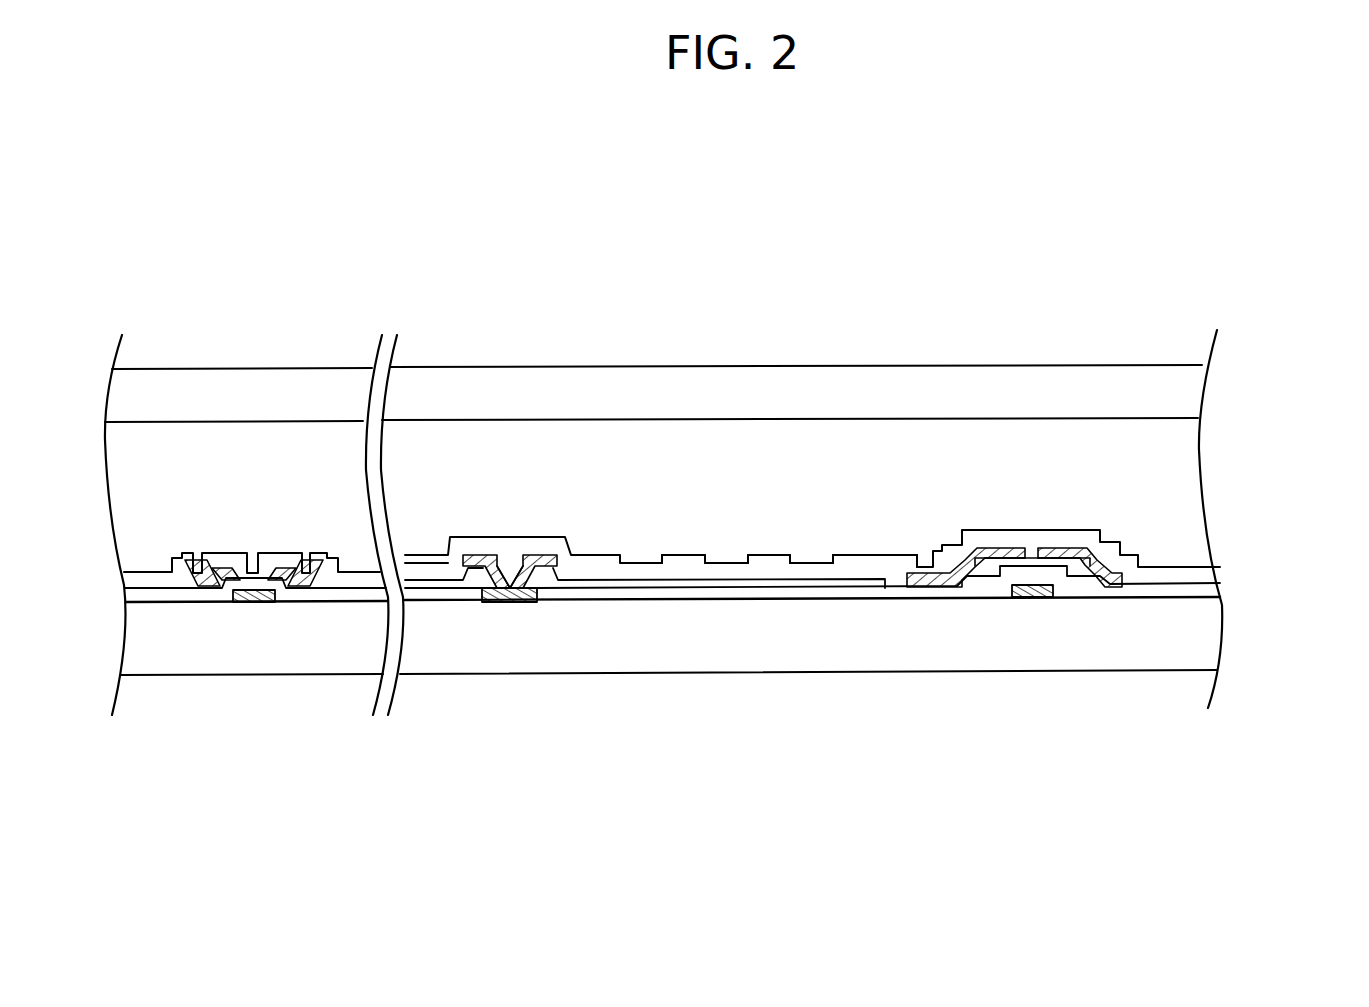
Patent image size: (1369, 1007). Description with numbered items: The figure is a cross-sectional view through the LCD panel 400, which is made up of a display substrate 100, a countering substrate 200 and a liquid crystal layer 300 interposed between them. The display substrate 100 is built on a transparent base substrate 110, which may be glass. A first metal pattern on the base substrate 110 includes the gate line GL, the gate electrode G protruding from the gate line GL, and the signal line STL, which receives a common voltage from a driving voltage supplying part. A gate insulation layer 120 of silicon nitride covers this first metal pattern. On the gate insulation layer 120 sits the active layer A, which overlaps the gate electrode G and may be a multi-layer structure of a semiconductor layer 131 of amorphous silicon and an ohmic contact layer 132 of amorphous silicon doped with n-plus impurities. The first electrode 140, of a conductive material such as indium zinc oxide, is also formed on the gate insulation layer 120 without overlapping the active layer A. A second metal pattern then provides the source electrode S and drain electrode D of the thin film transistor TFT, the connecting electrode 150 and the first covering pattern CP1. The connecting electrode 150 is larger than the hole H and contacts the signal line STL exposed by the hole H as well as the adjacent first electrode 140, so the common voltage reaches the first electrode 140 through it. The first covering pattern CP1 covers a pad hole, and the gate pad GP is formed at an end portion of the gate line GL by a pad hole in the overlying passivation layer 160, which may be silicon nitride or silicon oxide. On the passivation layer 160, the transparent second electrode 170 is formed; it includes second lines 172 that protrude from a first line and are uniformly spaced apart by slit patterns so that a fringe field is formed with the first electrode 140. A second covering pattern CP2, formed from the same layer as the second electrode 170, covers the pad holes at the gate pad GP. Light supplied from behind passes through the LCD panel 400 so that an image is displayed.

The LCD panel 400 is at (716, 274).
The countering substrate 200 is at (1183, 395).
The liquid crystal layer 300 is at (1197, 479).
The display substrate 100 is at (1302, 567).
The base substrate 110 is at (1215, 646).
The gate insulation layer 120 is at (1222, 590).
The first electrode 140 is at (658, 586).
The connecting electrode 150 is at (540, 585).
The passivation layer 160 is at (163, 582).
The second electrode 170 is at (868, 553).
The second lines 172 is at (765, 553).
The hole H is at (498, 603).
The signal line STL is at (507, 603).
The gate pad GP is at (333, 779).
The gate line GL is at (254, 603).
The first covering pattern CP1 is at (308, 586).
The second covering pattern CP2 is at (215, 585).
The thin film transistor TFT is at (1182, 778).
The drain electrode D is at (930, 589).
The gate electrode G is at (1030, 599).
The source electrode S is at (1120, 588).
The active layer A is at (1147, 735).
The semiconductor layer 131 is at (1072, 588).
The ohmic contact layer 132 is at (1093, 588).